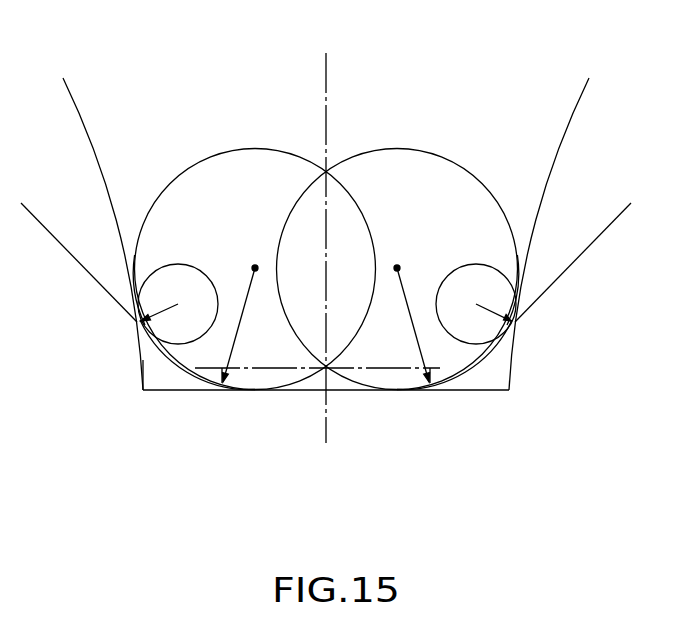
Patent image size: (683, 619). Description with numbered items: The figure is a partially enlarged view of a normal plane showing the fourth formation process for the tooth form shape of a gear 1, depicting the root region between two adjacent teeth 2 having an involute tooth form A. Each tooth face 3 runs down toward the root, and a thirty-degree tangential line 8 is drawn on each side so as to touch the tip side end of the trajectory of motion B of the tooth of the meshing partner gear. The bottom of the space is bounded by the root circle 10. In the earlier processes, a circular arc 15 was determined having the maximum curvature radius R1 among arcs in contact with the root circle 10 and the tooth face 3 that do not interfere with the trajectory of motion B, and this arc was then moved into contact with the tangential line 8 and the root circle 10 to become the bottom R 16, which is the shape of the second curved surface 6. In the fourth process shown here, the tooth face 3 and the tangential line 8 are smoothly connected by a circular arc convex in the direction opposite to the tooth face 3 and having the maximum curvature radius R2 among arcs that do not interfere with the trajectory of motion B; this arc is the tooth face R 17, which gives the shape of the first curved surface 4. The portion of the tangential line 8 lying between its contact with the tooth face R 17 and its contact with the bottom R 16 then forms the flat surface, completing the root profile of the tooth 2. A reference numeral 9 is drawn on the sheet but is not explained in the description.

The gear 1 is at (621, 88).
The tooth 2 is at (326, 248).
The tooth face 3 is at (98, 150).
The first curved surface 4 is at (135, 323).
The second curved surface 6 is at (208, 378).
The tangential line 8 is at (87, 270).
The center axis 9 is at (326, 115).
The root circle 10 is at (338, 383).
The circular arc 15 is at (328, 395).
The bottom R 16 is at (328, 395).
The tooth face R 17 is at (323, 311).
The involute tooth form A is at (141, 371).
The trajectory of motion B is at (297, 375).
The curvature radius R1' R1 is at (326, 269).
The curvature radius R2' R2 is at (160, 298).